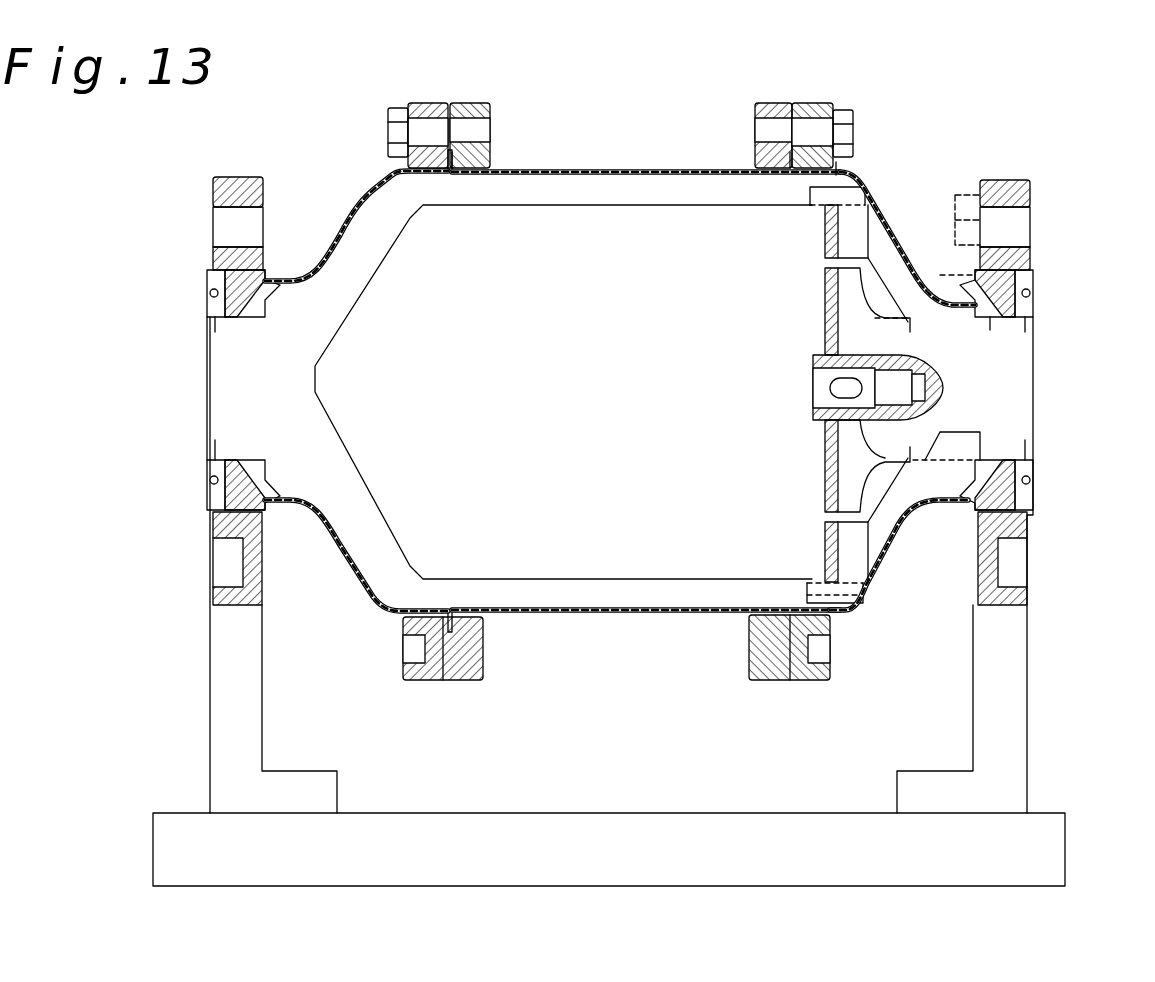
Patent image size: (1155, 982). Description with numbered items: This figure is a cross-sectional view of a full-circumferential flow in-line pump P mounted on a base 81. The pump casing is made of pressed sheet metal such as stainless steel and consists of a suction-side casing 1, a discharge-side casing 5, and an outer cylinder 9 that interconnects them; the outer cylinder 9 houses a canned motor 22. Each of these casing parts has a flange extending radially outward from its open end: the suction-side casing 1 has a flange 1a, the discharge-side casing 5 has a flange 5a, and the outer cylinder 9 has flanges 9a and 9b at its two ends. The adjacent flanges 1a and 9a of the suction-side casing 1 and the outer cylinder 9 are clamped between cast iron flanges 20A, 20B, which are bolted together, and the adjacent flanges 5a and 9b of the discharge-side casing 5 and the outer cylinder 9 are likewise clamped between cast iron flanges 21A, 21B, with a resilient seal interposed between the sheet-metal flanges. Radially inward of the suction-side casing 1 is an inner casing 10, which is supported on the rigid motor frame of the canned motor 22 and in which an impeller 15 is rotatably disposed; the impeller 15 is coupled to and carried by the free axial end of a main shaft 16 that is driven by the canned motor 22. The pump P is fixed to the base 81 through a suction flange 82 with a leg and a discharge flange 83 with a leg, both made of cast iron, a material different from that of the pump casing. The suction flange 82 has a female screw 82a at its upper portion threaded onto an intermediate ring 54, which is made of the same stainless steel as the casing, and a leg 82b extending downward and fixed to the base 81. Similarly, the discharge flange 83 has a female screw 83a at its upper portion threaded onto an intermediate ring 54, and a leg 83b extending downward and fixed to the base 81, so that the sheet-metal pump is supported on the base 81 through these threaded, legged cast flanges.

The suction-side casing 1 is at (893, 215).
The flange of suction-side casing 1a is at (851, 155).
The discharge-side casing 5 is at (335, 232).
The flange of discharge-side casing 5a is at (442, 152).
The outer cylinder 9 is at (558, 168).
The flange of outer cylinder 9a is at (763, 166).
The flange of outer cylinder 9b is at (490, 159).
The inner casing 10 is at (880, 273).
The impeller 15 is at (873, 482).
The main shaft 16 is at (815, 395).
The flange 20A is at (813, 110).
The flange 20B is at (781, 128).
The flange 21A is at (440, 128).
The flange 21B is at (471, 128).
The canned motor 22 is at (627, 205).
The intermediate ring 54 is at (208, 506).
The base 81 is at (628, 840).
The suction flange 82 is at (1031, 200).
The female screw 82a is at (1038, 285).
The leg 82b is at (1010, 696).
The discharge flange 83 is at (213, 182).
The female screw 83a is at (207, 282).
The leg 83b is at (222, 714).
The full-circumferential flow in-line pump P is at (701, 128).